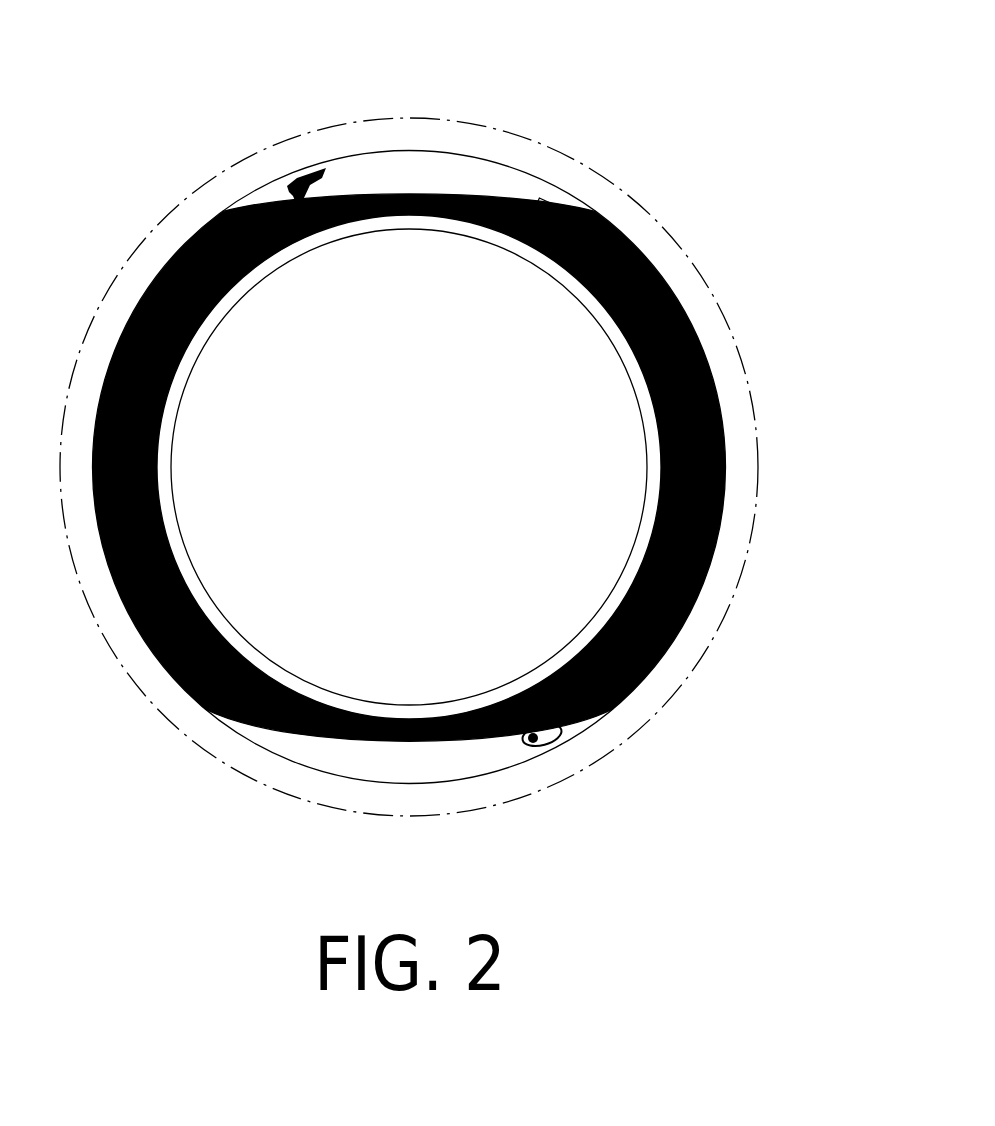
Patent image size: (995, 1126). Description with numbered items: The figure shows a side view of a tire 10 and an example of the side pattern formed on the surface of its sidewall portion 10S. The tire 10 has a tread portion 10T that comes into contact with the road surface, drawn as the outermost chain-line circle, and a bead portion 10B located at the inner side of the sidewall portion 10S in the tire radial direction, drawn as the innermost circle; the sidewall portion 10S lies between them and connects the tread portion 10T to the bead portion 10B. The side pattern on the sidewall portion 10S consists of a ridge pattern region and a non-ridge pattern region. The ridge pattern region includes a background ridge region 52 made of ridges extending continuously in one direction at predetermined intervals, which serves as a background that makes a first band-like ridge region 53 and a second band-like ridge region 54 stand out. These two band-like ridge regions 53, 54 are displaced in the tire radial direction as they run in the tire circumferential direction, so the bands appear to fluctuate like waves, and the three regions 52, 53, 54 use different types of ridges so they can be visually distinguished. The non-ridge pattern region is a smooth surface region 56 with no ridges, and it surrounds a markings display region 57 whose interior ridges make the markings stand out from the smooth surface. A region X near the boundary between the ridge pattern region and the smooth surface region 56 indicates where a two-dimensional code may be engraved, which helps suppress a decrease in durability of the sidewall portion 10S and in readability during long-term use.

The tire 10 is at (410, 441).
The tread portion 10T is at (497, 112).
The sidewall portion 10S is at (578, 193).
The bead portion 10B is at (552, 288).
The background ridge region 52 is at (163, 530).
The first band-like ridge region 53 is at (690, 337).
The second band-like ridge region 54 is at (641, 265).
The smooth surface region 56 is at (395, 142).
The markings display region 57 is at (415, 157).
The region X is at (540, 197).